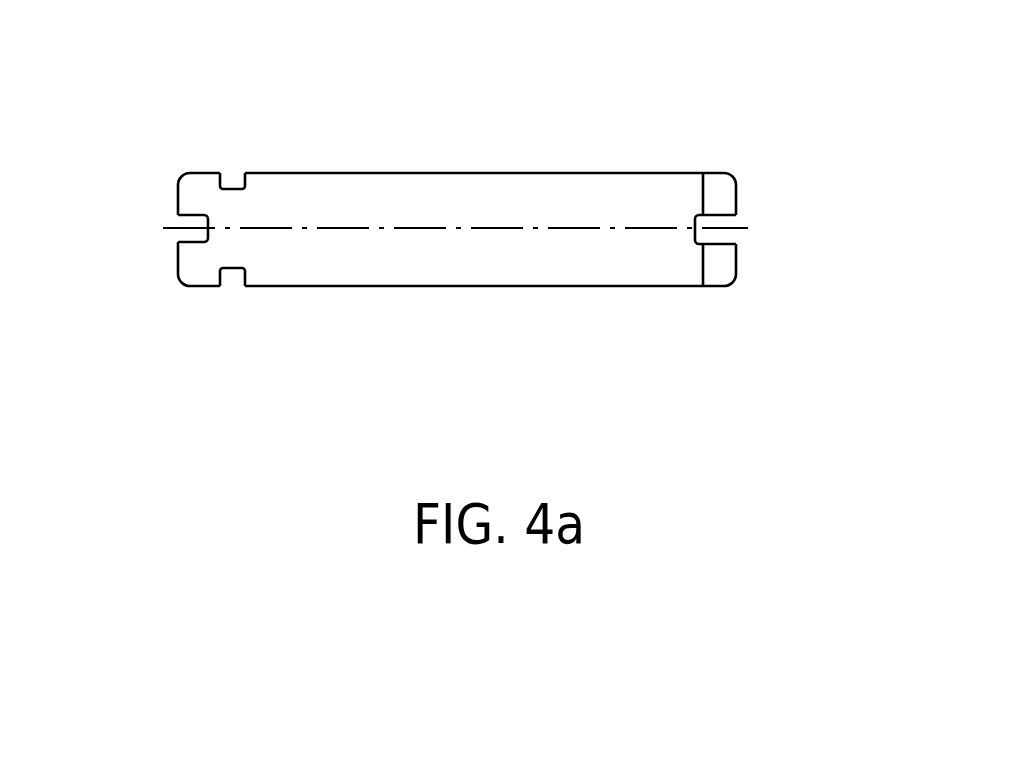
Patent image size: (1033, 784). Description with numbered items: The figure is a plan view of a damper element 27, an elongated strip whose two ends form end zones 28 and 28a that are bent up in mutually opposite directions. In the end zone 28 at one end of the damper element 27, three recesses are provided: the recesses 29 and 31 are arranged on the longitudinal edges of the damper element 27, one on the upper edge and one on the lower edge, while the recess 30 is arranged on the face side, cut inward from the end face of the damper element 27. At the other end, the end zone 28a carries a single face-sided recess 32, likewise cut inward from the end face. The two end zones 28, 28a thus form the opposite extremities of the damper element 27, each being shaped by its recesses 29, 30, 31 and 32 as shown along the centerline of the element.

The damper element 27 is at (420, 217).
The end zone 28 is at (197, 155).
The end zone 28a is at (733, 162).
The recess 29 is at (231, 277).
The recess 30 is at (188, 232).
The recess 31 is at (231, 185).
The face-sided recess 32 is at (714, 237).